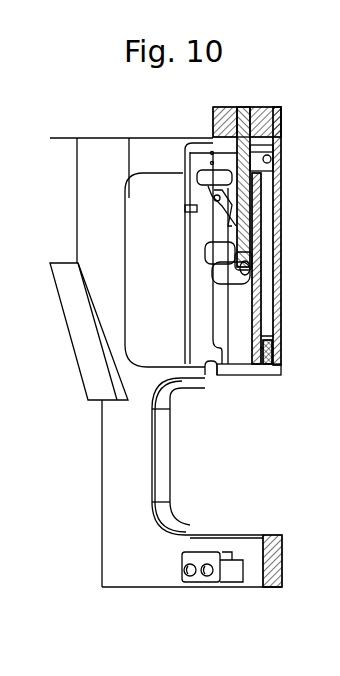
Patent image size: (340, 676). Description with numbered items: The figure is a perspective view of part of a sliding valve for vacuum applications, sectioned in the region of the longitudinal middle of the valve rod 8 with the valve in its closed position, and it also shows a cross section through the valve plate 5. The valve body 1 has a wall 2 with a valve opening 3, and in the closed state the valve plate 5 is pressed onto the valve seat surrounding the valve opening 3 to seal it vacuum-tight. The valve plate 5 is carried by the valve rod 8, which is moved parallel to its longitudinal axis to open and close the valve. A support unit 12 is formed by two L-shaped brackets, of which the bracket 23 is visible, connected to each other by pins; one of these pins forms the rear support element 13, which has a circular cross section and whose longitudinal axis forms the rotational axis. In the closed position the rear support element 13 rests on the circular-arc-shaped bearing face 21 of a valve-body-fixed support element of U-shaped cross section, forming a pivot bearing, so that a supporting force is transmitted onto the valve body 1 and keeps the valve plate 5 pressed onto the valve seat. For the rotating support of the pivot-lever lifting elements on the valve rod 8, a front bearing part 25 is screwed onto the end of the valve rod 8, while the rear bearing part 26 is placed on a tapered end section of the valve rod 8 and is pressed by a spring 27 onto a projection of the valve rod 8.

The valve body 1 is at (99, 134).
The wall 2 is at (117, 552).
The valve opening 3 is at (198, 512).
The valve plate 5 is at (147, 296).
The valve rod 8 is at (281, 122).
The support unit 12 is at (176, 301).
The rear support element 13 is at (262, 156).
The bearing face 21 is at (276, 342).
The L-shaped bracket 23 is at (197, 320).
The front bearing part 25 is at (247, 256).
The rear bearing part 26 is at (258, 182).
The spring 27 is at (232, 226).